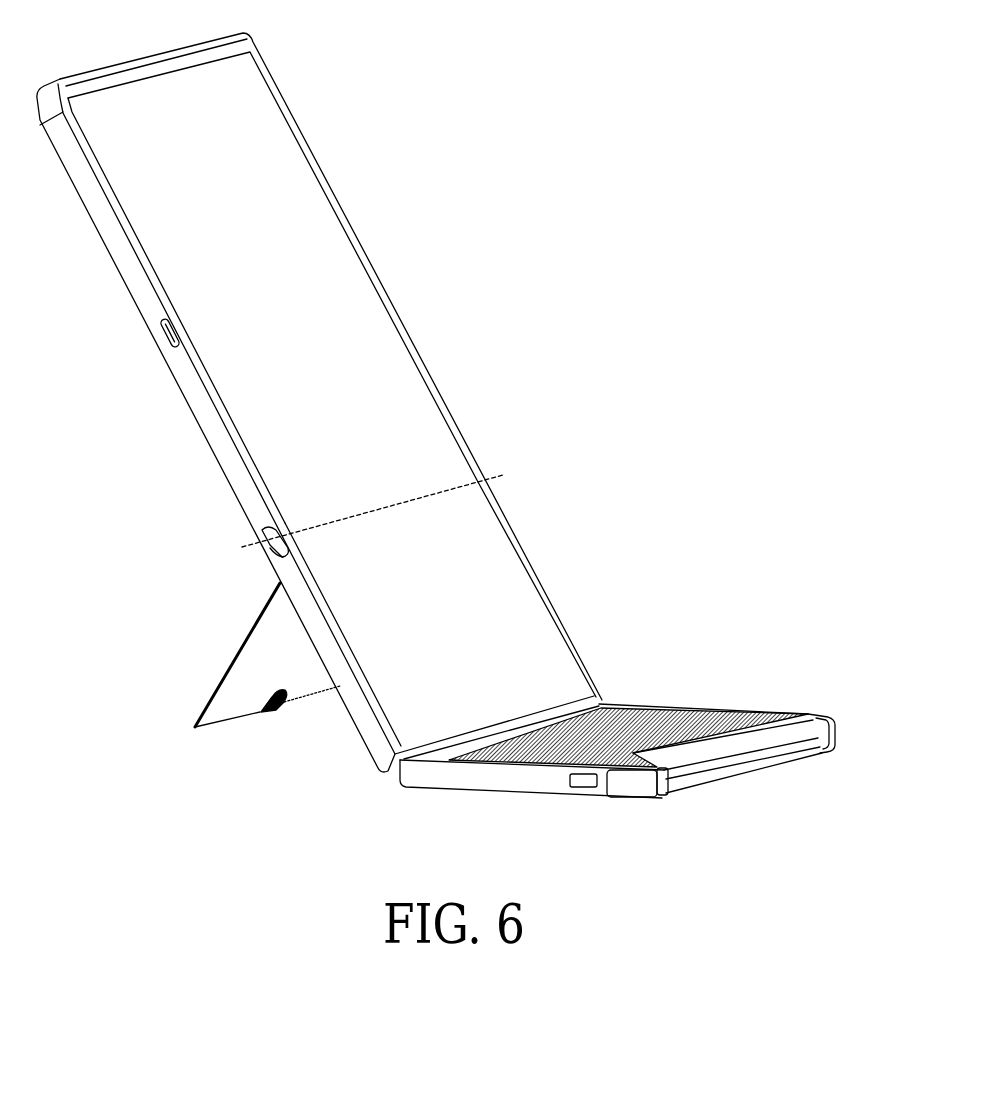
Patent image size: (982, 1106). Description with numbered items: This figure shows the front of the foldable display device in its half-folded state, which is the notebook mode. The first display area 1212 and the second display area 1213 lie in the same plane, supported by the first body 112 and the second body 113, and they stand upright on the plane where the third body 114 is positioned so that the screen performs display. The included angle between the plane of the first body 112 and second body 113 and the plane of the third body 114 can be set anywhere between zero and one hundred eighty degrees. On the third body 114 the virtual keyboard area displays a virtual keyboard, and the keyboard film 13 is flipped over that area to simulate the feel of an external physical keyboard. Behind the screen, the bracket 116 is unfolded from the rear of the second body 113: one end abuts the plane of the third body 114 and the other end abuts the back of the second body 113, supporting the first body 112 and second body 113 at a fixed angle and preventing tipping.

The first body 112 is at (198, 398).
The second body 113 is at (283, 563).
The third body 114 is at (472, 773).
The bracket 116 is at (260, 644).
The first display area 1212 is at (375, 308).
The second display area 1213 is at (512, 573).
The keyboard film 13 is at (710, 703).